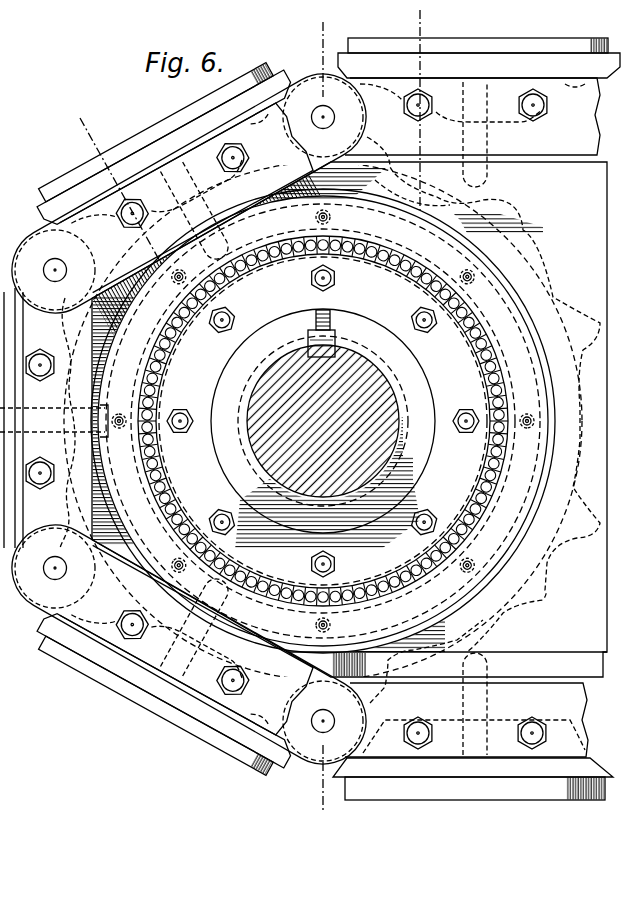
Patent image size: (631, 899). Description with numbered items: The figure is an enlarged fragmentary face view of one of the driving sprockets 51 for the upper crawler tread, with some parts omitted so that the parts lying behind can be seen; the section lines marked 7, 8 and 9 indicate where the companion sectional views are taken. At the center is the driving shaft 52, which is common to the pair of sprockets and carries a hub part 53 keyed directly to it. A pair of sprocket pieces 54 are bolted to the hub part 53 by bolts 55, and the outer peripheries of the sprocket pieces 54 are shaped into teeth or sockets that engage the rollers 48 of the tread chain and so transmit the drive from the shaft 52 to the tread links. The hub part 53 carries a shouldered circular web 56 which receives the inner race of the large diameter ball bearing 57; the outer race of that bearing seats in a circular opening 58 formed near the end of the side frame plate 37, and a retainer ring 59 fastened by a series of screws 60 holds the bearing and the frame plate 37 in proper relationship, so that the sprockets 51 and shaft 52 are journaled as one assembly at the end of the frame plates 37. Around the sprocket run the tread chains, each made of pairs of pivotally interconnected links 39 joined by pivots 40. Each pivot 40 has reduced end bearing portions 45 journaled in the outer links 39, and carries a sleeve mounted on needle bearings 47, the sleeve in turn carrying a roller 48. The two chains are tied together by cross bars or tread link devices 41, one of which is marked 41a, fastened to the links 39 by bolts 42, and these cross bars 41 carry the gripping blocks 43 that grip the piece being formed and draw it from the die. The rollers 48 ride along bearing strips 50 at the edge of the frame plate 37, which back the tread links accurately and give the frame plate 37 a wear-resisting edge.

The section line 7- 7 is at (316, 37).
The section line 8- 8 is at (398, 32).
The section line 9- 9 is at (103, 127).
The side frame plate 37 is at (606, 556).
The link 39 is at (596, 126).
The pivot 40 is at (335, 117).
The cross bar 41 is at (490, 64).
The clamp bar 41a is at (0, 165).
The bolt 42 is at (433, 108).
The gripping block 43 is at (537, 42).
The reduced end bearing portion 45 is at (0, 110).
The needle bearing 47 is at (0, 84).
The roller 48 is at (308, 78).
The bearing strip 50 is at (543, 658).
The driving sprocket 51 is at (549, 277).
The driving shaft 52 is at (372, 384).
The hub part 53 is at (361, 305).
The sprocket piece 54 is at (480, 206).
The bolt 55 is at (270, 295).
The shouldered circular web 56 is at (505, 292).
The ball bearing 57 is at (420, 266).
The circular opening 58 is at (512, 322).
The retainer ring 59 is at (524, 498).
The screw 60 is at (533, 415).